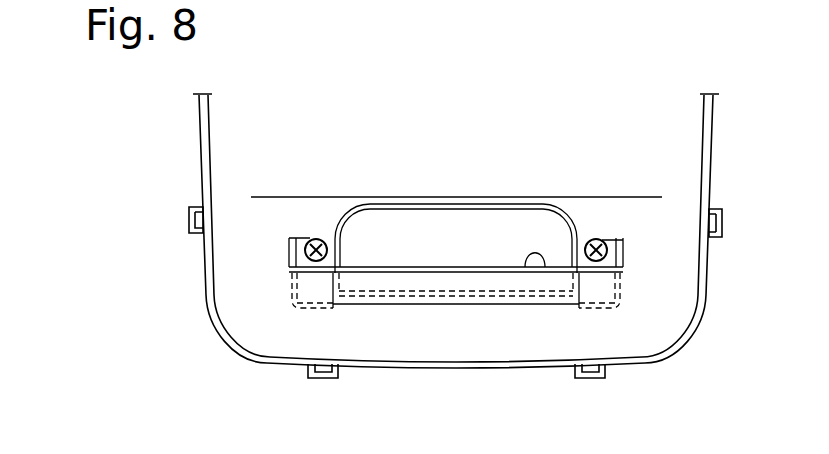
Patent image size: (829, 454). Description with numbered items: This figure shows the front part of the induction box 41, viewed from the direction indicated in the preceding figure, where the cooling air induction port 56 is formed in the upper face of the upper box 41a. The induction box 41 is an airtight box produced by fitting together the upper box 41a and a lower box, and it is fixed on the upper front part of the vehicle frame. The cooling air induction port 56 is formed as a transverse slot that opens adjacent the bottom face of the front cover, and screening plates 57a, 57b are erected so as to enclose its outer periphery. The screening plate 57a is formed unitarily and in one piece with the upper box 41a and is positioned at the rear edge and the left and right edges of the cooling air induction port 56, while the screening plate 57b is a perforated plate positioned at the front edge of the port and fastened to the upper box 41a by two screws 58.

The induction box 41 is at (382, 236).
The upper box 41a is at (199, 154).
The cooling air induction port 56 is at (456, 314).
The screening plate 57a is at (453, 209).
The screening plate 57b is at (525, 267).
The screw 58 is at (305, 250).